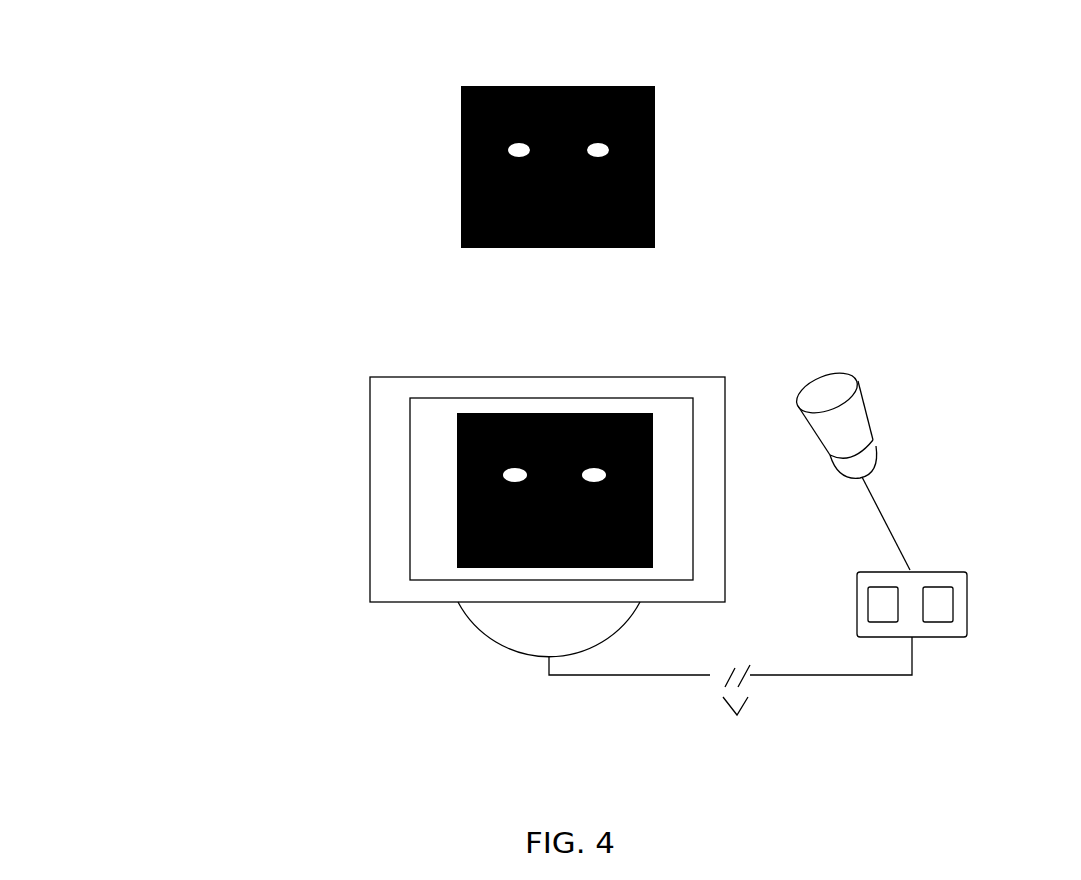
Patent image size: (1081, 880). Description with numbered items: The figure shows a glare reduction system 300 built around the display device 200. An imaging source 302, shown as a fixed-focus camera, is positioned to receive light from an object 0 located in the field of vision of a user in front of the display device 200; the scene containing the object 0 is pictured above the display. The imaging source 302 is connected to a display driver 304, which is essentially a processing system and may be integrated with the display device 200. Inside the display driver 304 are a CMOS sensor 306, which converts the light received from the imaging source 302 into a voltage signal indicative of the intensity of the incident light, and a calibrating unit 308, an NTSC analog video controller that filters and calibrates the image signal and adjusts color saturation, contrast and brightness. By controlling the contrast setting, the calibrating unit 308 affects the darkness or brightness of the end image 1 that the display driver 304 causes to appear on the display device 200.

The glare reduction system 300 is at (193, 118).
The display device 200 is at (370, 404).
The end image 1 is at (453, 495).
The object 0 is at (655, 168).
The imaging source 302 is at (873, 425).
The display driver 304 is at (967, 573).
The CMOS sensor 306 is at (878, 604).
The calibrating unit 308 is at (940, 608).